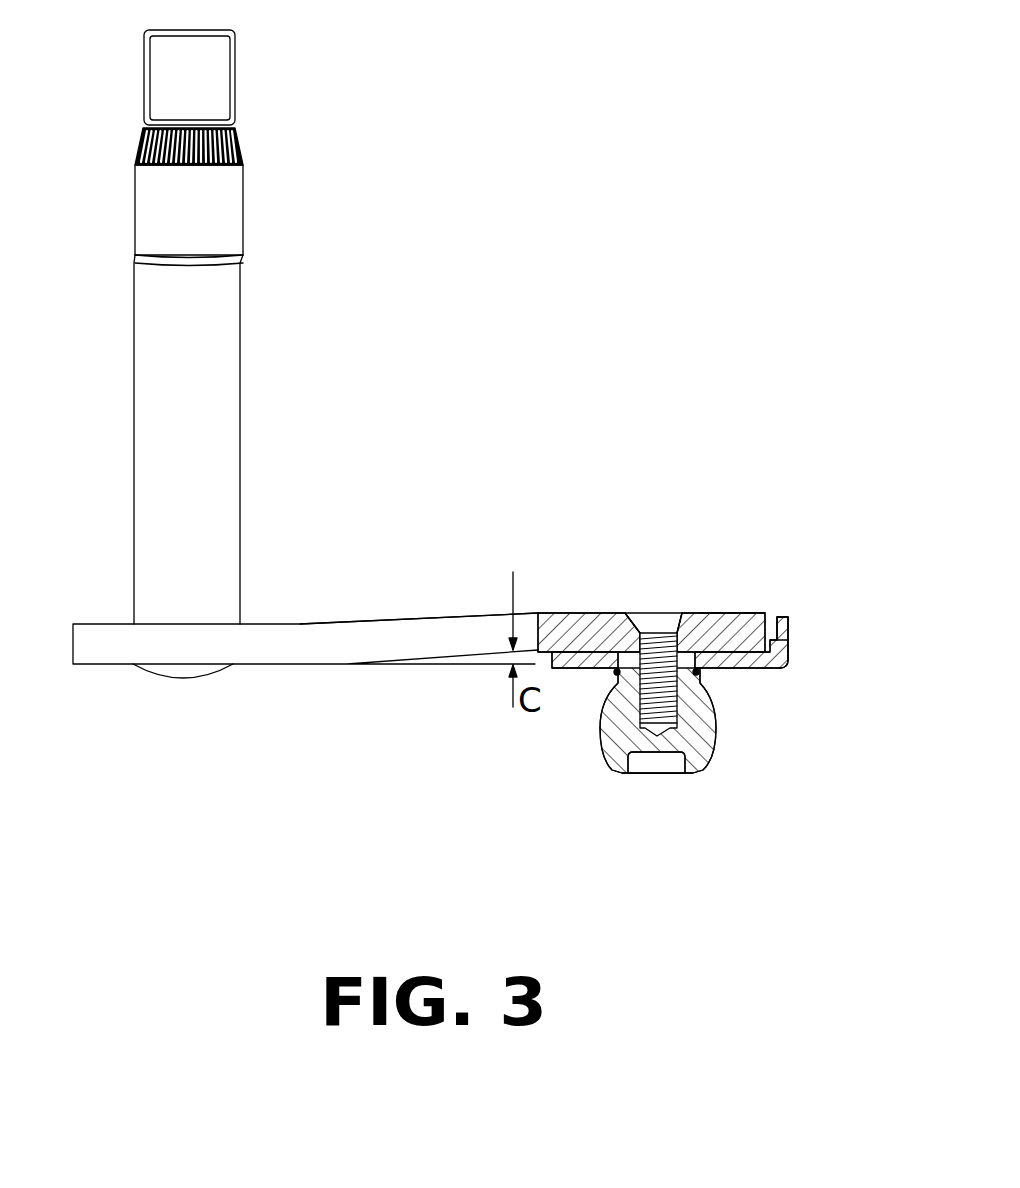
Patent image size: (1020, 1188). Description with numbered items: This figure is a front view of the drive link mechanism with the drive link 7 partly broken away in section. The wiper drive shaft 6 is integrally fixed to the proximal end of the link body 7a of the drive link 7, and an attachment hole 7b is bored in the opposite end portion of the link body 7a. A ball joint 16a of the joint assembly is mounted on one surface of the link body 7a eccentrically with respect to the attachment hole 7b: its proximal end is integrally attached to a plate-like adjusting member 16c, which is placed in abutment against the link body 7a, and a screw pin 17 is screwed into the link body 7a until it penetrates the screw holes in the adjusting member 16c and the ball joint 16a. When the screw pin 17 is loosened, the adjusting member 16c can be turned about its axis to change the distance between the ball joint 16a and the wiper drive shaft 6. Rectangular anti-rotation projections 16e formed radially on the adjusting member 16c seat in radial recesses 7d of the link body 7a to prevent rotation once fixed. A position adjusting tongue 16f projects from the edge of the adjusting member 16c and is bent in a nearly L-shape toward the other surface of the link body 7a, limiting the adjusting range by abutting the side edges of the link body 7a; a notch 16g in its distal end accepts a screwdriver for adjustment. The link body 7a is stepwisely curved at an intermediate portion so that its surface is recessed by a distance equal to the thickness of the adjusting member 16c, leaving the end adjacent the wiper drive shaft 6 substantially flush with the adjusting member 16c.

The wiper drive shaft 6 is at (158, 489).
The drive link 7 is at (390, 707).
The link body 7a is at (312, 635).
The attachment hole 7b is at (650, 613).
The recesses 7d is at (742, 613).
The ball joint 16a is at (710, 770).
The adjusting member 16c is at (733, 668).
The anti-rotation projections 16e is at (763, 668).
The position adjusting tongue 16f is at (785, 655).
The notch 16g is at (790, 627).
The screw pin 17 is at (603, 743).